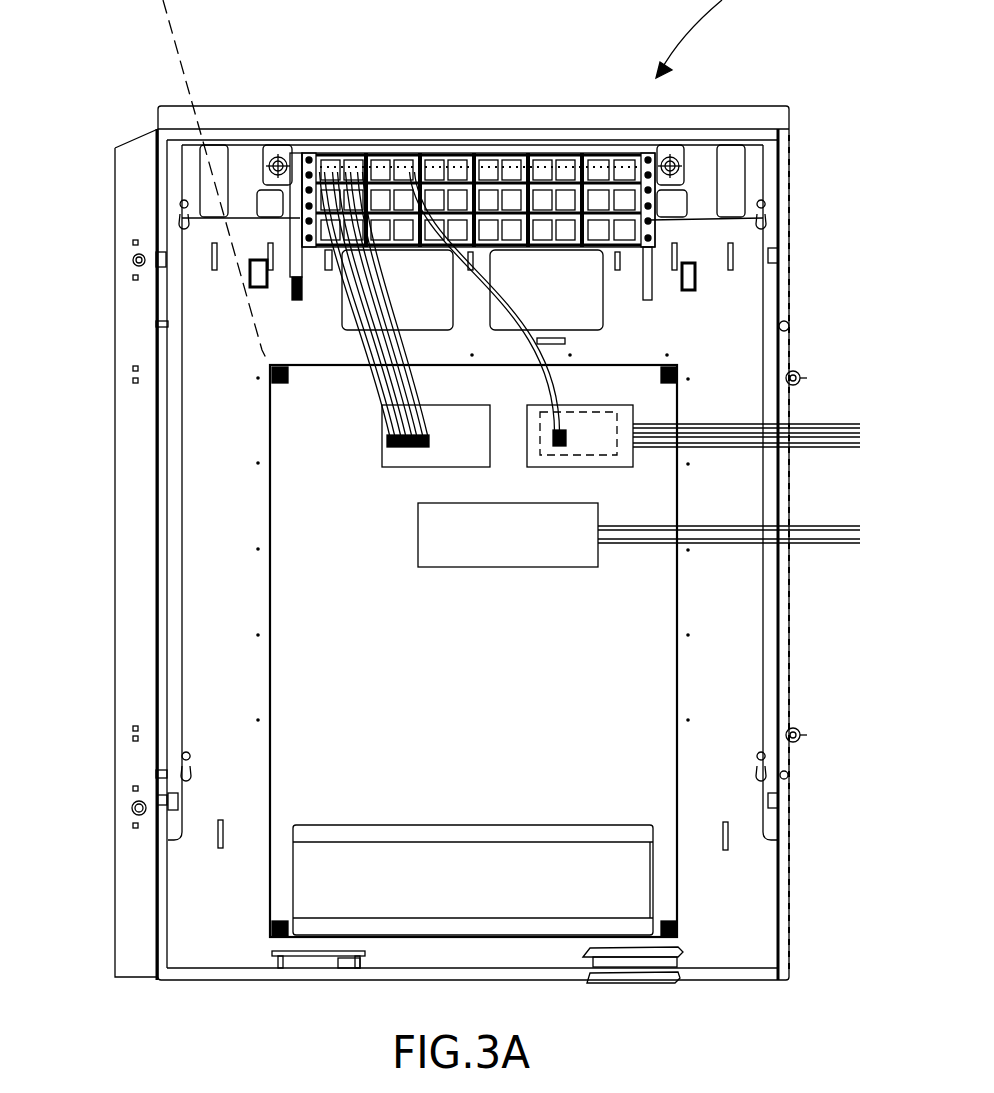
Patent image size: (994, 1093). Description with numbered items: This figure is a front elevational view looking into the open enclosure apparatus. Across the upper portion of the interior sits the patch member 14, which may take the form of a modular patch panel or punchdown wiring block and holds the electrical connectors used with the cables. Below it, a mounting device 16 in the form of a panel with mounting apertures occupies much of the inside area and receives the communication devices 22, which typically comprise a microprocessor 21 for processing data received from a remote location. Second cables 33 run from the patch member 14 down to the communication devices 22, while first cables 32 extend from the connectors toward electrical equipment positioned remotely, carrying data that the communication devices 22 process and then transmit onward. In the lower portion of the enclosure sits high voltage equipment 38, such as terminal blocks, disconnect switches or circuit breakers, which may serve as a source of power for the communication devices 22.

The patch member 14 is at (657, 226).
The mounting device 16 is at (265, 373).
The microprocessor 21 is at (607, 422).
The communication devices 22 is at (617, 455).
The first cables 32 is at (823, 425).
The second cables 33 is at (550, 382).
The high voltage equipment 38 is at (643, 880).